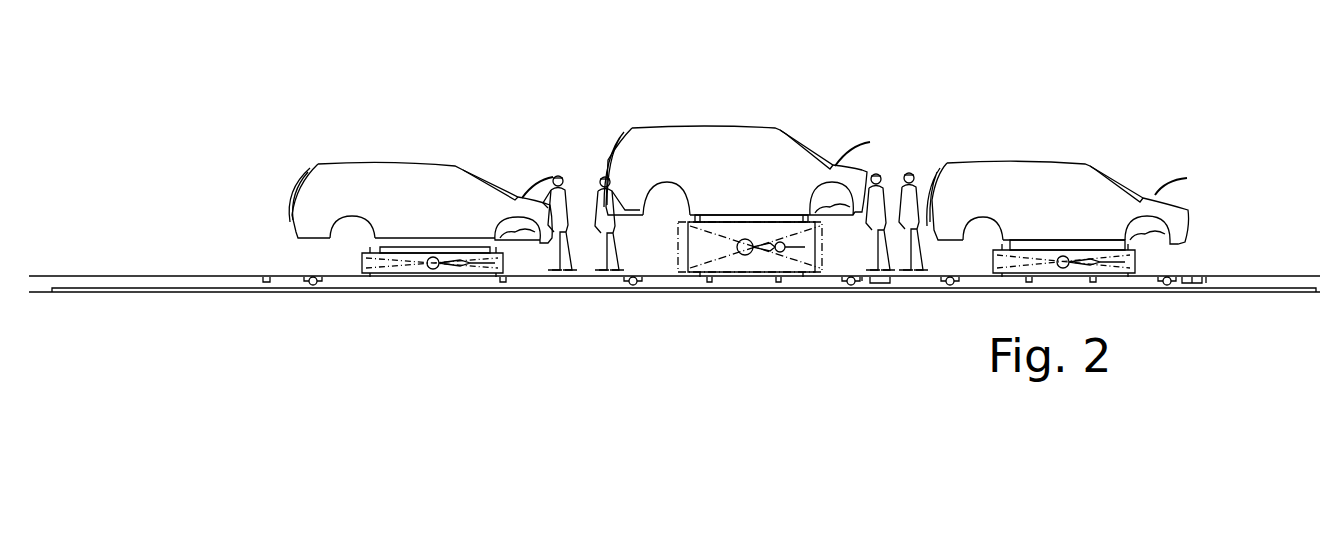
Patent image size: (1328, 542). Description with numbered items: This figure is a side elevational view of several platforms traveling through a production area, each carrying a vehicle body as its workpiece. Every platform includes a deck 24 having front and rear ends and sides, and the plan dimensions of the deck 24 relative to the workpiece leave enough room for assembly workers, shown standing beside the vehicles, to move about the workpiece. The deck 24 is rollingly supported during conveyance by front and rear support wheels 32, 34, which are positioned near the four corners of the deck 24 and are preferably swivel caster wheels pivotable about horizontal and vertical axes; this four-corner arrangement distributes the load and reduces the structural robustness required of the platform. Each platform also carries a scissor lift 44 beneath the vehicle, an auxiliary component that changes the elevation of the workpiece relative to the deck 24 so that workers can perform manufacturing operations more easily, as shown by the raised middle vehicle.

The deck 24 is at (371, 280).
The front support wheels 32 is at (853, 288).
The rear support wheels 34 is at (632, 286).
The scissor lift 44 is at (790, 257).